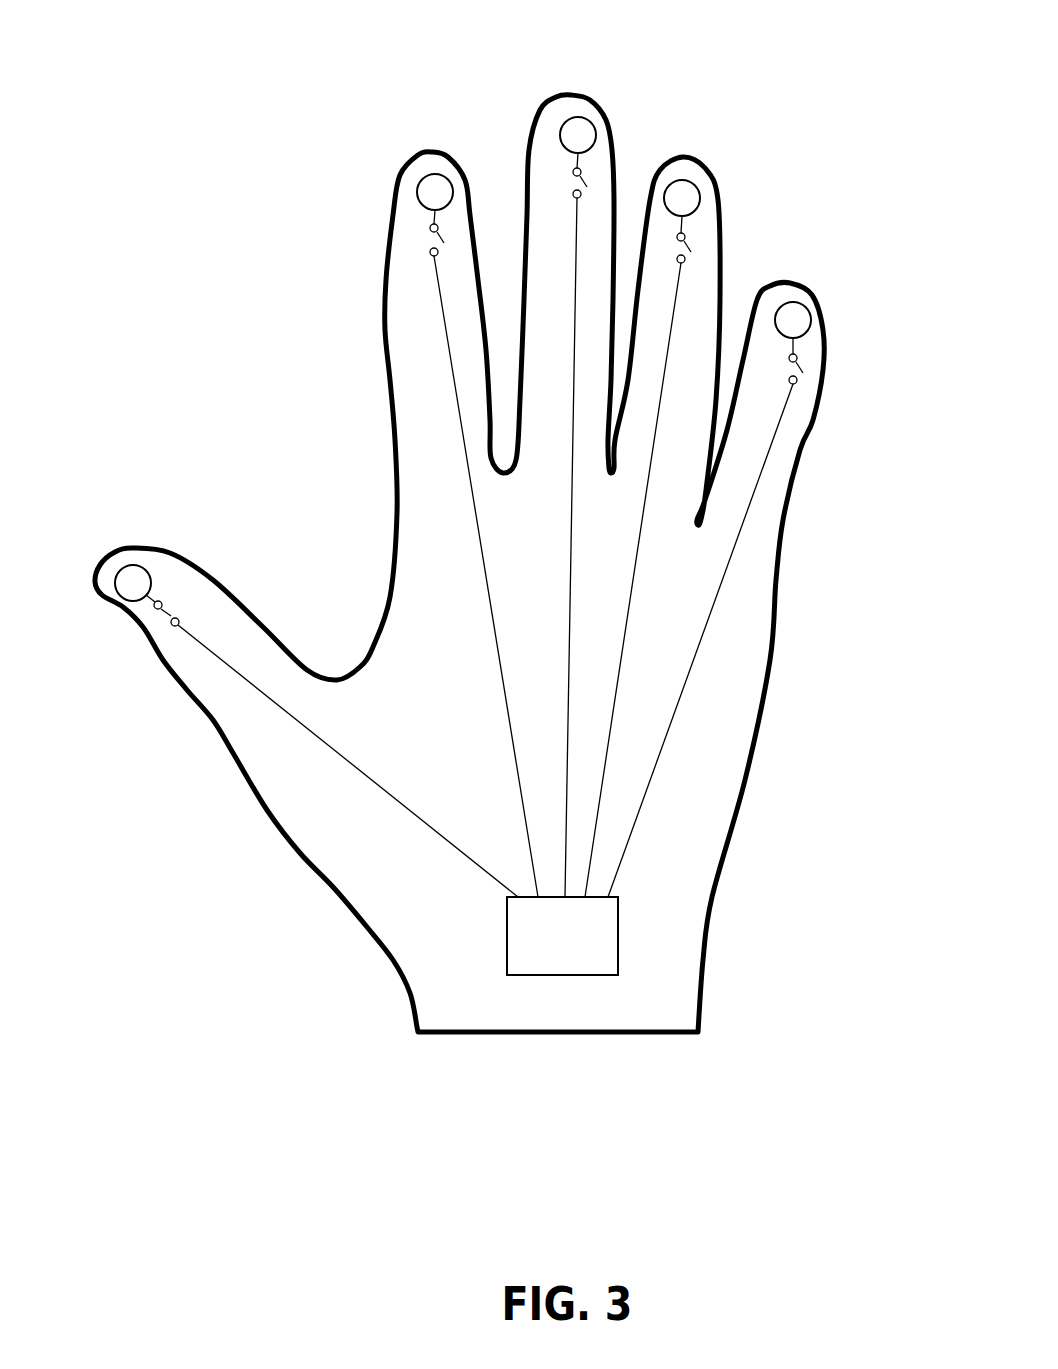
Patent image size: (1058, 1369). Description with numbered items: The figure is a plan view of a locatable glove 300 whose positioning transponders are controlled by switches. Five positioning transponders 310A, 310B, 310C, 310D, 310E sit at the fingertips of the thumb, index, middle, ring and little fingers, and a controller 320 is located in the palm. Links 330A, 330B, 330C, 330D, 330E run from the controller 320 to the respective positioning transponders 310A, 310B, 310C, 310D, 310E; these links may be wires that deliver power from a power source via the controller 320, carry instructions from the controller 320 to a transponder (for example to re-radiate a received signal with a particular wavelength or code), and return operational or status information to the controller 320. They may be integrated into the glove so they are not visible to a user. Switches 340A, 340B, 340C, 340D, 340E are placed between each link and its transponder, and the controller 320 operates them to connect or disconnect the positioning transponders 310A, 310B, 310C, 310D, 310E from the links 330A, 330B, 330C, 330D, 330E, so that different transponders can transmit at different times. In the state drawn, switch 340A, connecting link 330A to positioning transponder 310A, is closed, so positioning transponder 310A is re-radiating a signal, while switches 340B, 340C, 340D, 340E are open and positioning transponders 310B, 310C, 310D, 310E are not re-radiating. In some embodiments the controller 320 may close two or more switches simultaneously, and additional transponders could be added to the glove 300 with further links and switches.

The locatable glove 300 is at (118, 31).
The positioning transponder 310A is at (133, 562).
The positioning transponder 310B is at (417, 190).
The positioning transponder 310C is at (597, 128).
The positioning transponder 310D is at (702, 200).
The positioning transponder 310E is at (813, 310).
The controller 320 is at (547, 958).
The link 330A is at (357, 765).
The link 330B is at (495, 638).
The link 330C is at (570, 583).
The link 330D is at (643, 515).
The link 330E is at (727, 563).
The switch 340A is at (160, 620).
The switch 340B is at (427, 248).
The switch 340C is at (583, 185).
The switch 340D is at (690, 248).
The switch 340E is at (803, 368).